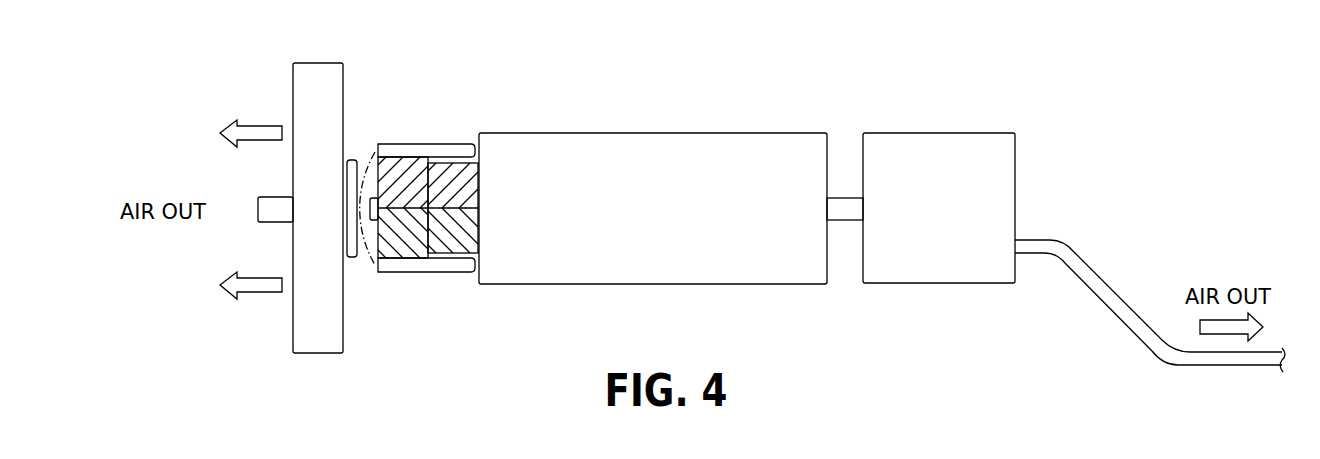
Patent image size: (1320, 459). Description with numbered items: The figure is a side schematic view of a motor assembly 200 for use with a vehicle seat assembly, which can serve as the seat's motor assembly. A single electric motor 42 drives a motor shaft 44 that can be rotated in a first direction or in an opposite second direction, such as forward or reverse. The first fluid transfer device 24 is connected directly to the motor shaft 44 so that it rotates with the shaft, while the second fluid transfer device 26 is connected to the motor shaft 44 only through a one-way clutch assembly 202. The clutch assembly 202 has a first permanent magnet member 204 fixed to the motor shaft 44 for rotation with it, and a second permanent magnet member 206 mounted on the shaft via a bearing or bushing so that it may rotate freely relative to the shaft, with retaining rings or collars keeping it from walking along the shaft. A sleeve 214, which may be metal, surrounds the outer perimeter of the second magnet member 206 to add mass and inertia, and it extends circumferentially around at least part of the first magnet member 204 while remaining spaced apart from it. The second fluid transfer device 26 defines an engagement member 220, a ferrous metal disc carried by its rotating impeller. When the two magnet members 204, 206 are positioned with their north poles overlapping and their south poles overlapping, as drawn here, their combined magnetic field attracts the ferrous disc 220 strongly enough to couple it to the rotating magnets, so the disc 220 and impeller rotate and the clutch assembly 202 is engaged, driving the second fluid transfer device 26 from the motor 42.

The motor assembly 200 is at (1084, 63).
The second fluid transfer device 26 is at (293, 95).
The engagement member 220 is at (352, 259).
The one-way clutch assembly 202 is at (396, 112).
The sleeve 214 is at (426, 145).
The second permanent magnet member 206 is at (400, 258).
The first permanent magnet member 204 is at (455, 255).
The electric motor 42 is at (660, 133).
The motor shaft 44 is at (843, 198).
The first fluid transfer device 24 is at (937, 133).